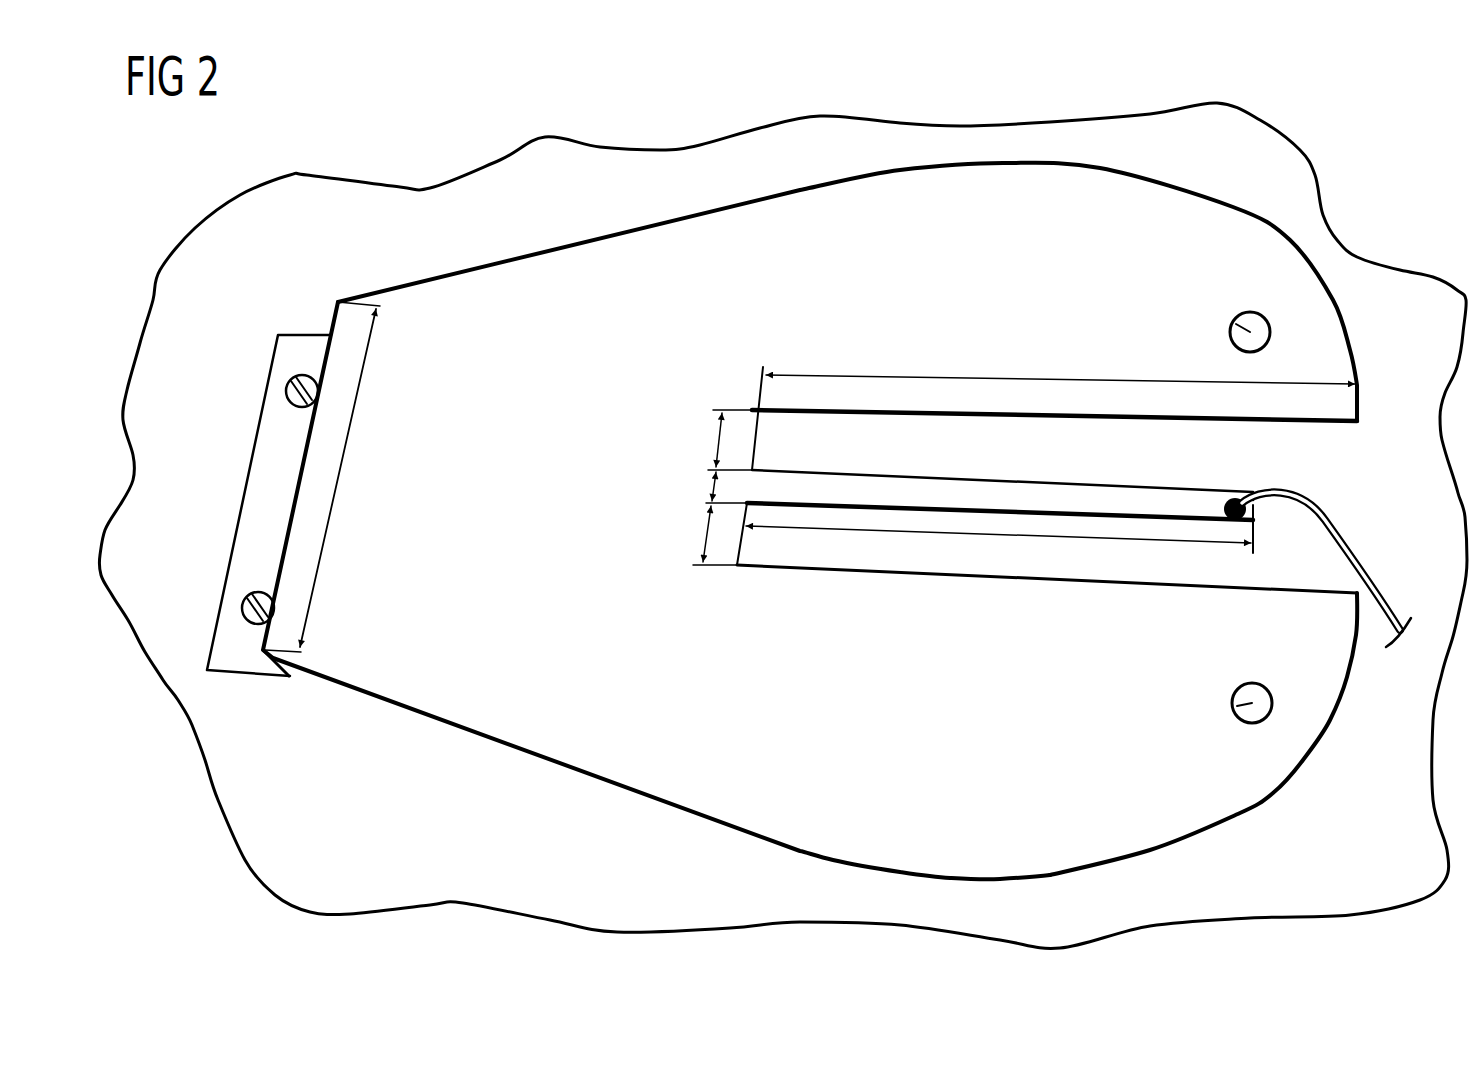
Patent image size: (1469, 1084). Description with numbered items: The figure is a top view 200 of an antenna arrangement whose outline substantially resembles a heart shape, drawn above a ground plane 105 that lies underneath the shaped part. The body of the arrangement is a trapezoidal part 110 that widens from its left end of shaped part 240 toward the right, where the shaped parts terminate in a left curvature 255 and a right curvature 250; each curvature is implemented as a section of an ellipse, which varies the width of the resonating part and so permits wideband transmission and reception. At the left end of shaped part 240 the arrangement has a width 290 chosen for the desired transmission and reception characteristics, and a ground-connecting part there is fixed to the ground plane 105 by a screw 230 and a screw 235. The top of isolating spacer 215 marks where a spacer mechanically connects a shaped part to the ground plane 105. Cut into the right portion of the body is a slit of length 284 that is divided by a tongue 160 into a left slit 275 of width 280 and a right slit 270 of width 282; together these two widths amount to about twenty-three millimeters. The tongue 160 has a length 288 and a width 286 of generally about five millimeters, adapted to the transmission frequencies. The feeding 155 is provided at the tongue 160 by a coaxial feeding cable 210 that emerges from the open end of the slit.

The ground plane 105 is at (386, 827).
The trapezoidal part 110 is at (553, 715).
The feeding 155 is at (1254, 522).
The tongue 160 is at (960, 497).
The top view of antenna arrangement 200 is at (490, 117).
The coaxial feeding cable 210 is at (1340, 560).
The top of isolating spacer 215 is at (1236, 324).
The screw at ground-connecting part 230 is at (243, 604).
The screw at ground-connecting part 235 is at (287, 388).
The left end of shaped part 240 is at (338, 300).
The right curvature 250 is at (1258, 806).
The left curvature 255 is at (1290, 240).
The right slit 270 is at (865, 553).
The left slit 275 is at (882, 433).
The width of left slit 280 is at (716, 440).
The width of right slit 282 is at (706, 534).
The length of slit 284 is at (1046, 378).
The width of tongue 286 is at (712, 486).
The length of tongue 288 is at (998, 546).
The width of left end of shaped part 290 is at (332, 487).